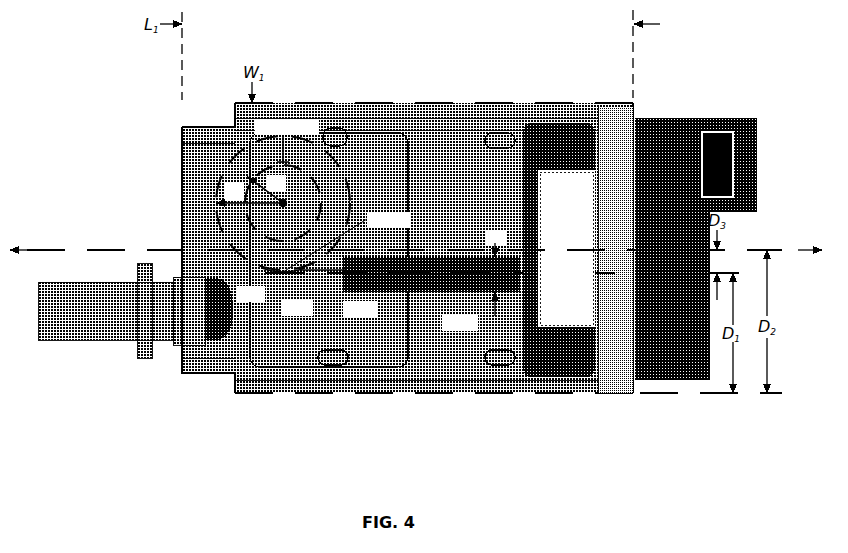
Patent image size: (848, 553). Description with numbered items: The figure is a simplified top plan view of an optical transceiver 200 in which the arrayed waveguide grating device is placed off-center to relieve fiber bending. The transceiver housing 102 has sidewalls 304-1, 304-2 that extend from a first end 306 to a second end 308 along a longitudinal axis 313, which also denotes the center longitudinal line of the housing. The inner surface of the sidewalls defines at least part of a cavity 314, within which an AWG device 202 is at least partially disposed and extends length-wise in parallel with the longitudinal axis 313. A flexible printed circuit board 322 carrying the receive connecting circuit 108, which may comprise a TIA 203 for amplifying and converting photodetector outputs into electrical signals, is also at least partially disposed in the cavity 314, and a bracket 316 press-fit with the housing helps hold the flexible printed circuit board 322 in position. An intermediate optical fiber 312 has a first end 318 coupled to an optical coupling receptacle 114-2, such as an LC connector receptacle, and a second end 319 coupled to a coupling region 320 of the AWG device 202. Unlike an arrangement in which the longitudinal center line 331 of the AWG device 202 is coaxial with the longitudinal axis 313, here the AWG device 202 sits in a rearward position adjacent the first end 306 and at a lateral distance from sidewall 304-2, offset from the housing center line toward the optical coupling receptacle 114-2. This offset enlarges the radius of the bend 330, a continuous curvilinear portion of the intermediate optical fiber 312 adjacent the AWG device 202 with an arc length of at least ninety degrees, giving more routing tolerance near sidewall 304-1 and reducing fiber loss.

The optical transceiver 200 is at (120, 92).
The transceiver housing 102 is at (318, 103).
The receive connecting circuit 108 is at (665, 128).
The TIA 203 is at (715, 133).
The first end 306 is at (634, 108).
The second end 308 is at (198, 127).
The longitudinal axis 313 is at (43, 249).
The cavity 314 is at (420, 130).
The sidewall 304-1 is at (474, 103).
The sidewall 304-2 is at (427, 398).
The flexible printed circuit board 322 is at (545, 132).
The bend 330 is at (212, 170).
The first end 318 is at (212, 302).
The second end 319 is at (277, 280).
The coupling region 320 is at (280, 282).
The longitudinal center line 331 is at (325, 282).
The AWG device 202 is at (420, 290).
The intermediate optical fiber 312 is at (318, 327).
The bracket 316 is at (612, 368).
The optical coupling receptacle 114-2 is at (72, 313).